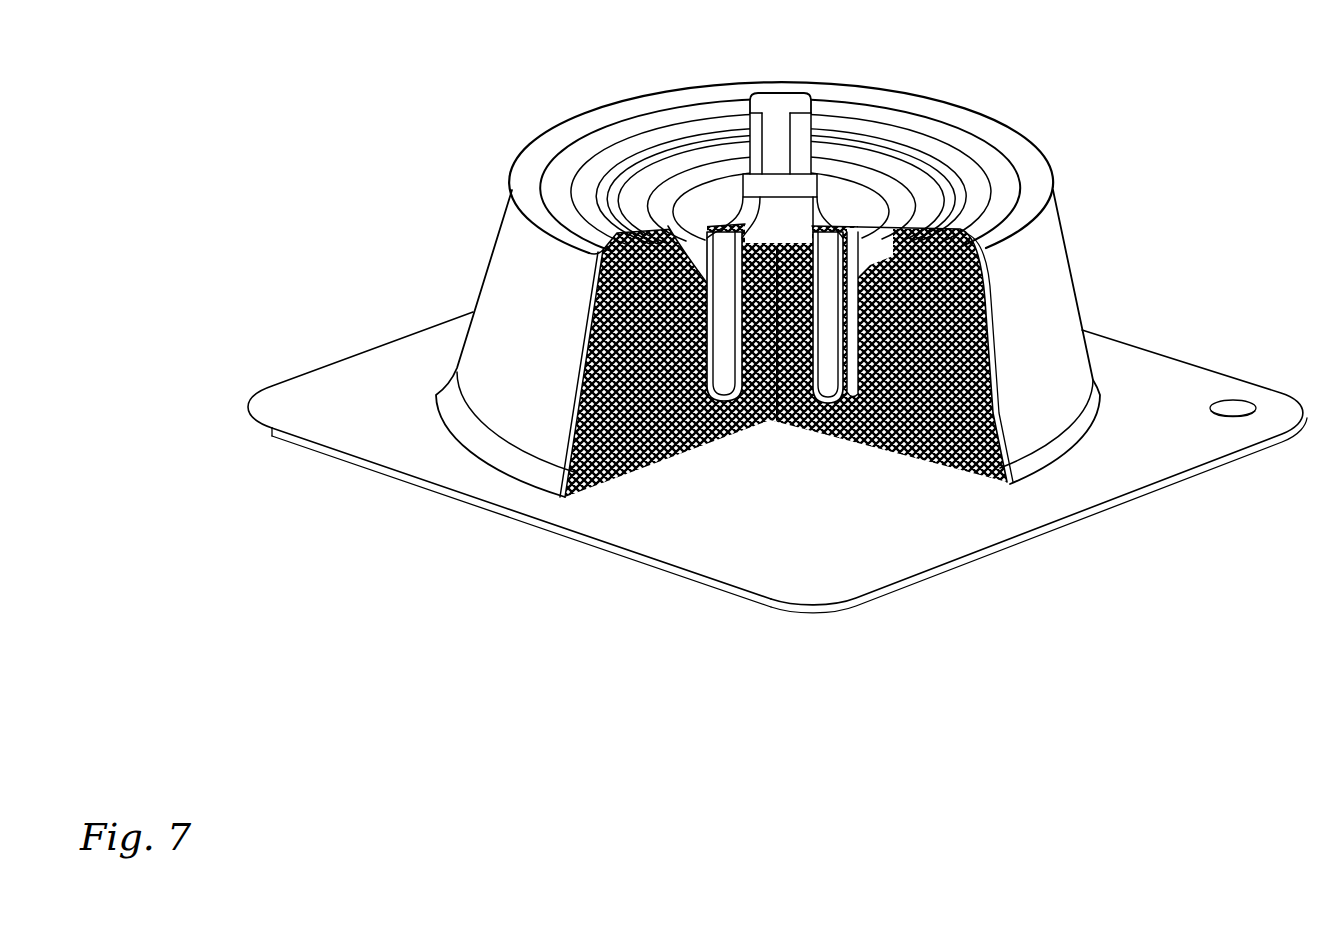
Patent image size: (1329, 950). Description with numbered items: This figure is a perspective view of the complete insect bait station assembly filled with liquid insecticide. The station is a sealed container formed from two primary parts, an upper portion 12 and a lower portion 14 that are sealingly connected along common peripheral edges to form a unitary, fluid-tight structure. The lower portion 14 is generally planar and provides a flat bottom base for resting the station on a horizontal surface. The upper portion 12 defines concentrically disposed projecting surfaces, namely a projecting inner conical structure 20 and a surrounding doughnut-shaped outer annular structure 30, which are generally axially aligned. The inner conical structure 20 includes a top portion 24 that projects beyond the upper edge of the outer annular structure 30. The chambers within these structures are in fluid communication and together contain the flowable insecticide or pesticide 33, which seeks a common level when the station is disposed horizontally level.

The upper portion 12 is at (400, 420).
The lower portion 14 is at (806, 500).
The inner conical structure 20 is at (854, 210).
The top portion 24 is at (807, 137).
The outer annular structure 30 is at (768, 303).
The flowable insect bait 33 is at (950, 455).